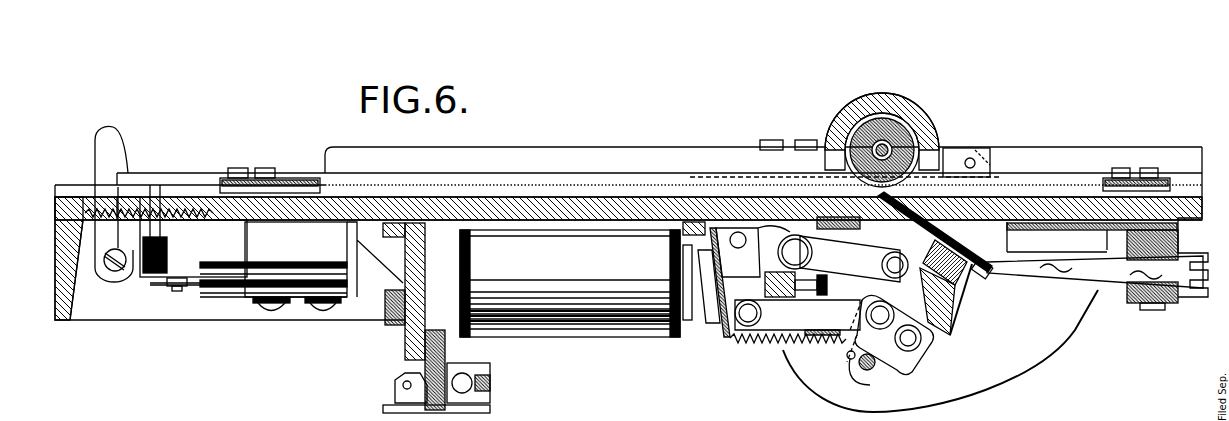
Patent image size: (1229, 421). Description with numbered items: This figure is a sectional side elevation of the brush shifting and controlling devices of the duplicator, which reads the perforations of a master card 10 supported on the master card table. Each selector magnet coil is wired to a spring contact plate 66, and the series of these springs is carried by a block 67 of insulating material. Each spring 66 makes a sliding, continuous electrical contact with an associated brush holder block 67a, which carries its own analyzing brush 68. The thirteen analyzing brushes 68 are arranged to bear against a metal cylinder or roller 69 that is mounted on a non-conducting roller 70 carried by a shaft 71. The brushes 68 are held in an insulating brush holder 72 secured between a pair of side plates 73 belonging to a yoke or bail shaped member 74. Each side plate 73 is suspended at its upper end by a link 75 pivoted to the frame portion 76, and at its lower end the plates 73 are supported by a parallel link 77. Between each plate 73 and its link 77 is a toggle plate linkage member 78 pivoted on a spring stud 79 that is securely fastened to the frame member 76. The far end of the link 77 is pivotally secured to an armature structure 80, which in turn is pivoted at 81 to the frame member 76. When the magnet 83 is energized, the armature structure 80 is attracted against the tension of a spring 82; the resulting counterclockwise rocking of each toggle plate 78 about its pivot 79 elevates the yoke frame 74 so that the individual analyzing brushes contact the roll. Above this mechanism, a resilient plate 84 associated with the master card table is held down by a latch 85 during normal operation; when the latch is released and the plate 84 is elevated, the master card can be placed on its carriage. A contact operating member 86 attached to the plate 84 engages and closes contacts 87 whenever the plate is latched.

The master card 10 is at (690, 177).
The spring contact plate 66 is at (1058, 270).
The block of insulating material 67 is at (1130, 260).
The brush holder block 67a is at (972, 258).
The analyzing brush 68 is at (925, 227).
The metal cylinder or roller 69 is at (909, 130).
The non-conducting roller 70 is at (912, 142).
The shaft 71 is at (882, 150).
The insulating brush holder 72 is at (960, 275).
The side plates 73 is at (950, 292).
The yoke or bail shaped member 74 is at (947, 342).
The link 75 is at (856, 272).
The frame portion 76 is at (770, 243).
The parallel link 77 is at (803, 316).
The toggle plate linkage member 78 is at (932, 342).
The spring stud 79 is at (875, 366).
The armature structure 80 is at (722, 322).
The pivot 81 is at (738, 248).
The spring 82 is at (752, 343).
The magnet 83 is at (576, 283).
The resilient plate 84 is at (508, 175).
The latch 85 is at (118, 137).
The contact operating member 86 is at (163, 188).
The contacts 87 is at (187, 290).